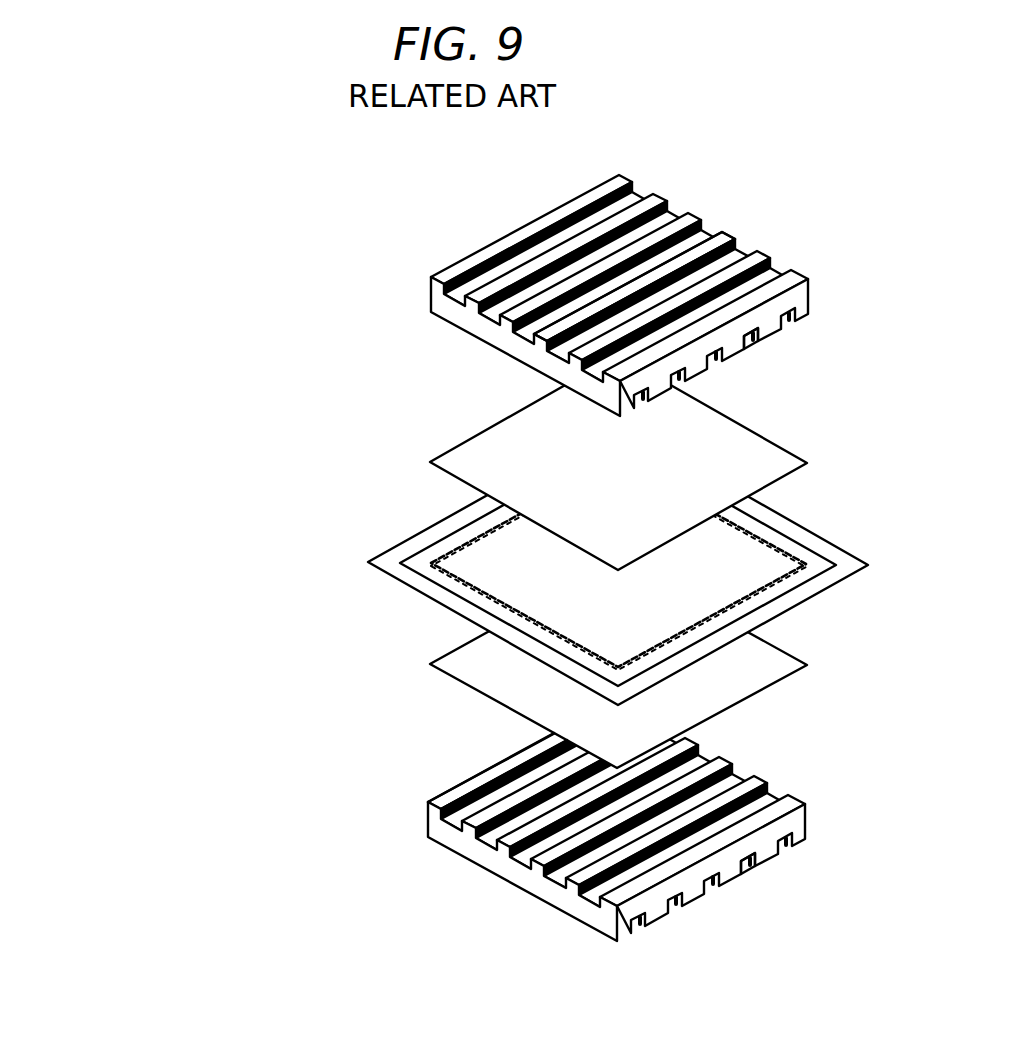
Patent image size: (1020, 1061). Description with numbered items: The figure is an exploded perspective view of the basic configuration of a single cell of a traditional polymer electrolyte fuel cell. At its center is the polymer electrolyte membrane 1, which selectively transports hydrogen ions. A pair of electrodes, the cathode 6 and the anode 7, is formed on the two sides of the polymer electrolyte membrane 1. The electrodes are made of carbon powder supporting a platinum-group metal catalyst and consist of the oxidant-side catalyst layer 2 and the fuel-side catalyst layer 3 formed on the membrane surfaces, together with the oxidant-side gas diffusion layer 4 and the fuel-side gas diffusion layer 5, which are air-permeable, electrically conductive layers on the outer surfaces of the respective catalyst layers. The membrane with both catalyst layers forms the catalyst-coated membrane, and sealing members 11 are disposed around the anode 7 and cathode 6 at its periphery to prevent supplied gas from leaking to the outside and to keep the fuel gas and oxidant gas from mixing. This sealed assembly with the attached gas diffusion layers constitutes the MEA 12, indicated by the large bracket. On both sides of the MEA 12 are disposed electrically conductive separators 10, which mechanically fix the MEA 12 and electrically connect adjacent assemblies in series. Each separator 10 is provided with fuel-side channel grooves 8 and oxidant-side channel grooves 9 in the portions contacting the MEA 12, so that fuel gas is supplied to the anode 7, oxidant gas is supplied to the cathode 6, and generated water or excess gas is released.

The polymer electrolyte membrane 1 is at (403, 560).
The oxidant-side catalyst layer 2 is at (480, 547).
The fuel-side catalyst layer 3 is at (453, 609).
The oxidant-side gas diffusion layer 4 is at (483, 448).
The fuel-side gas diffusion layer 5 is at (478, 673).
The cathode 6 is at (345, 385).
The anode 7 is at (337, 598).
The fuel-side channel grooves 8 is at (757, 337).
The oxidant-side channel grooves 9 is at (750, 243).
The separator 10 is at (433, 292).
The sealing member 11 is at (402, 577).
The MEA 12 is at (190, 372).